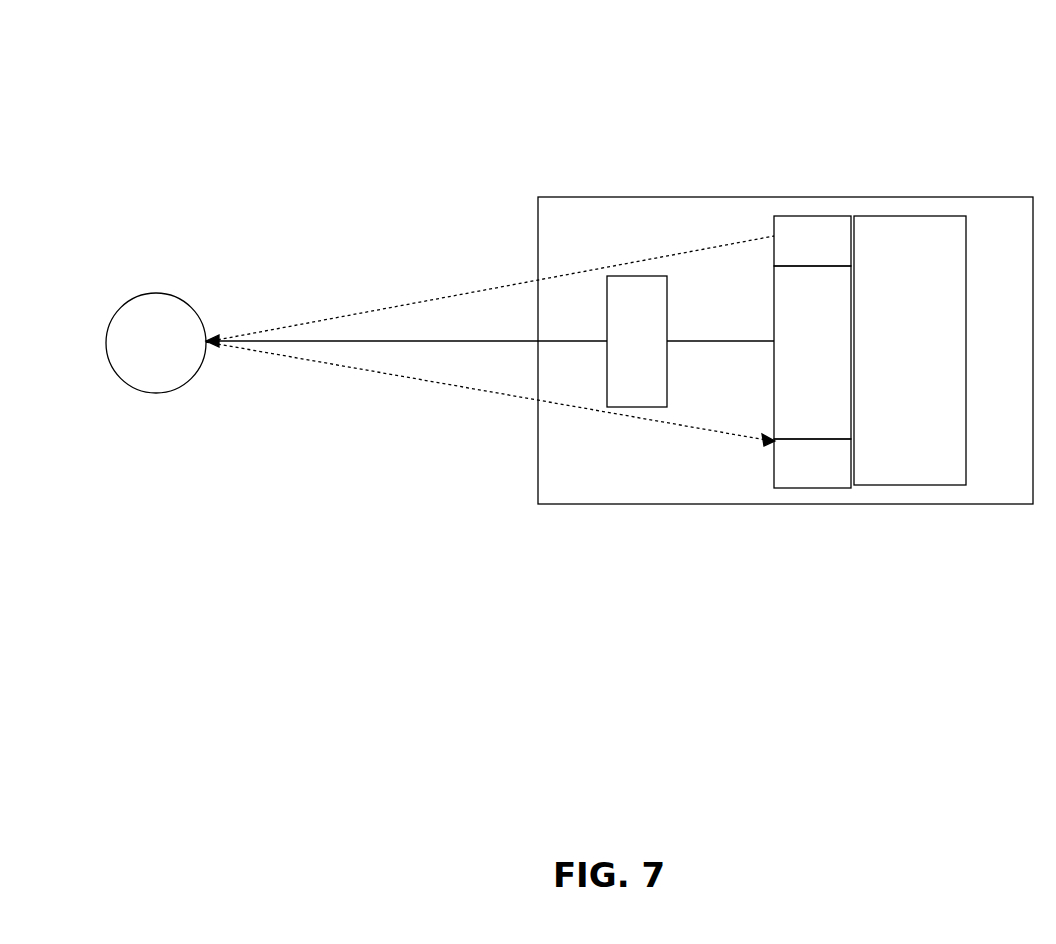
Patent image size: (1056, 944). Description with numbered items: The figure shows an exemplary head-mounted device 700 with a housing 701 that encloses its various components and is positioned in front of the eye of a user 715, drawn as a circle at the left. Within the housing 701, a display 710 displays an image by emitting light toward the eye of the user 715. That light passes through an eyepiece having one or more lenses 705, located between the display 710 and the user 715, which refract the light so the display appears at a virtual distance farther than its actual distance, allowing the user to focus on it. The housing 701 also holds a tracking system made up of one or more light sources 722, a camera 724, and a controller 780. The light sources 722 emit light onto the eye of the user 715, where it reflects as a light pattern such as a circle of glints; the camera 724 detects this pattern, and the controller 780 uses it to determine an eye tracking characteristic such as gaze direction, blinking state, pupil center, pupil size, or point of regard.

The head-mounted device 700 is at (404, 66).
The housing 701 is at (561, 230).
The lenses 705 is at (616, 352).
The display 710 is at (789, 355).
The user 715 is at (135, 355).
The light sources 722 is at (791, 252).
The camera 724 is at (791, 475).
The controller 780 is at (890, 340).